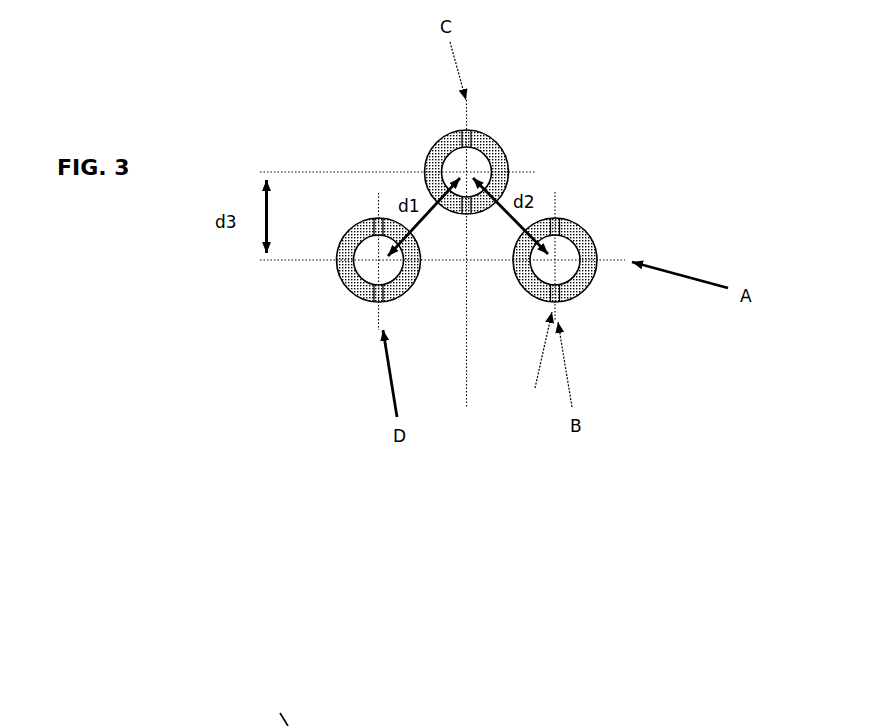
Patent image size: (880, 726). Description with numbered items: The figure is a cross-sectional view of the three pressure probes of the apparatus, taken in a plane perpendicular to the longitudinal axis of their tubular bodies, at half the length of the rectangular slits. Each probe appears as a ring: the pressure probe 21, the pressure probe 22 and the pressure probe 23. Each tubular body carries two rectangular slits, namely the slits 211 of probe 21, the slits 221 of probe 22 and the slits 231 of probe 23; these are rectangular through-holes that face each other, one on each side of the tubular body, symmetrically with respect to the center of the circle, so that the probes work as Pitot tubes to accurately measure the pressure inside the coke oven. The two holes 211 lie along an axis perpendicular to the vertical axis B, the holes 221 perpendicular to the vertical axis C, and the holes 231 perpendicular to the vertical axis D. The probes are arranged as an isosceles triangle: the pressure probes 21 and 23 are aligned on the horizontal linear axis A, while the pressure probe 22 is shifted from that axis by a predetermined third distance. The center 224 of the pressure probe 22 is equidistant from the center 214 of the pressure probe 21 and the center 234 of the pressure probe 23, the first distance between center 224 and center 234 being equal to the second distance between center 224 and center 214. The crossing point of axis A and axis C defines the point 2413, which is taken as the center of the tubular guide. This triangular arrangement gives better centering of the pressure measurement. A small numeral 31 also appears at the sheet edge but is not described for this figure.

The pressure probe 22 is at (435, 231).
The center of the pressure probe 22 224 is at (460, 166).
The rectangular slits 221 is at (472, 128).
The pressure probe 23 is at (295, 268).
The center of the pressure probe 23 234 is at (375, 262).
The rectangular slits 231 is at (372, 217).
The pressure probe 21 is at (605, 272).
The center of the pressure probe 21 214 is at (562, 258).
The rectangular slits 211 is at (563, 213).
The point 2413 is at (468, 263).
The positioning pin 31 is at (277, 712).